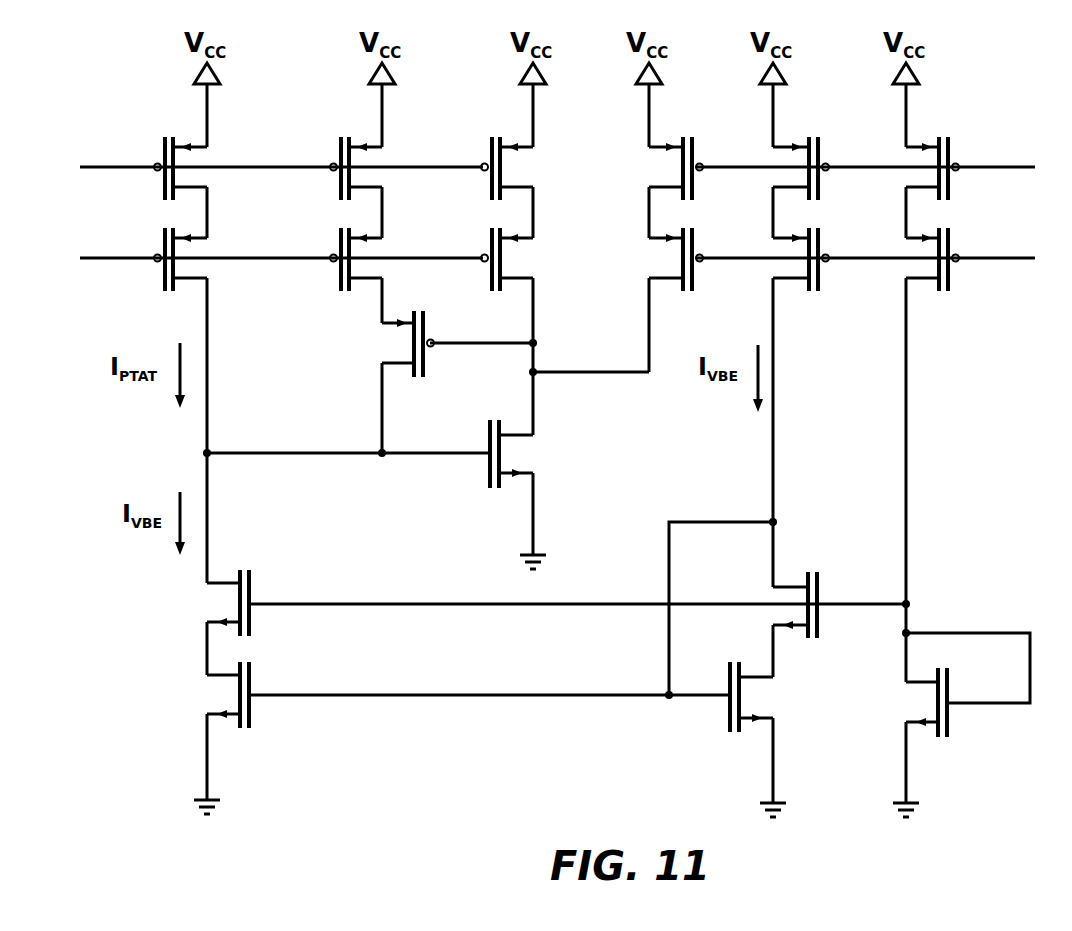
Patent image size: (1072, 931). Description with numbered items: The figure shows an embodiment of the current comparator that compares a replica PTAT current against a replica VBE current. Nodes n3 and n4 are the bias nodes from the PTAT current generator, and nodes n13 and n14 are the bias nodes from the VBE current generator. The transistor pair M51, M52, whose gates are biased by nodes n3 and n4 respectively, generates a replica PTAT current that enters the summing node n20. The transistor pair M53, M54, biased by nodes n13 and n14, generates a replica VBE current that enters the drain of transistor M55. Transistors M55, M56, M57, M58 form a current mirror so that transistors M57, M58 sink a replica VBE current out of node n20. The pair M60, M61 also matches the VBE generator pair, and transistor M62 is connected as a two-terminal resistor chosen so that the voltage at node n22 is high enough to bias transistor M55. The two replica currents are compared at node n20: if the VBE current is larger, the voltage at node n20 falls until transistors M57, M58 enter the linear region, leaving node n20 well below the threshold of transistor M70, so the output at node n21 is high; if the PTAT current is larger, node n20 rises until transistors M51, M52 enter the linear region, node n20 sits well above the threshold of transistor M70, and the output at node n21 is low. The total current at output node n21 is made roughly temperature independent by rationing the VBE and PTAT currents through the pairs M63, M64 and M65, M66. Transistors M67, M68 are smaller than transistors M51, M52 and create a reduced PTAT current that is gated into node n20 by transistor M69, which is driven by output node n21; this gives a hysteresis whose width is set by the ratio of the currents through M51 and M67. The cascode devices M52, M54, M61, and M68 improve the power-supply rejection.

The transistor M51 is at (207, 168).
The cascode transistor M52 is at (207, 259).
The transistor M53 is at (777, 168).
The cascode transistor M54 is at (779, 259).
The current mirror transistor M55 is at (768, 605).
The current mirror transistor M56 is at (767, 697).
The current mirror transistor M57 is at (207, 603).
The current mirror transistor M58 is at (212, 695).
The transistor M60 is at (908, 168).
The cascode transistor M61 is at (909, 259).
The two-terminal resistor transistor M62 is at (907, 702).
The transistor M63 is at (663, 168).
The transistor M64 is at (667, 259).
The transistor M65 is at (527, 168).
The transistor M66 is at (527, 259).
The transistor M67 is at (382, 168).
The cascode transistor M68 is at (382, 258).
The gating transistor M69 is at (394, 344).
The output transistor M70 is at (525, 454).
The bias node n3 is at (281, 153).
The bias node n4 is at (281, 244).
The bias node n13 is at (866, 155).
The bias node n14 is at (866, 249).
The summing node n20 is at (348, 438).
The output node n21 is at (539, 357).
The bias node n22 is at (606, 610).